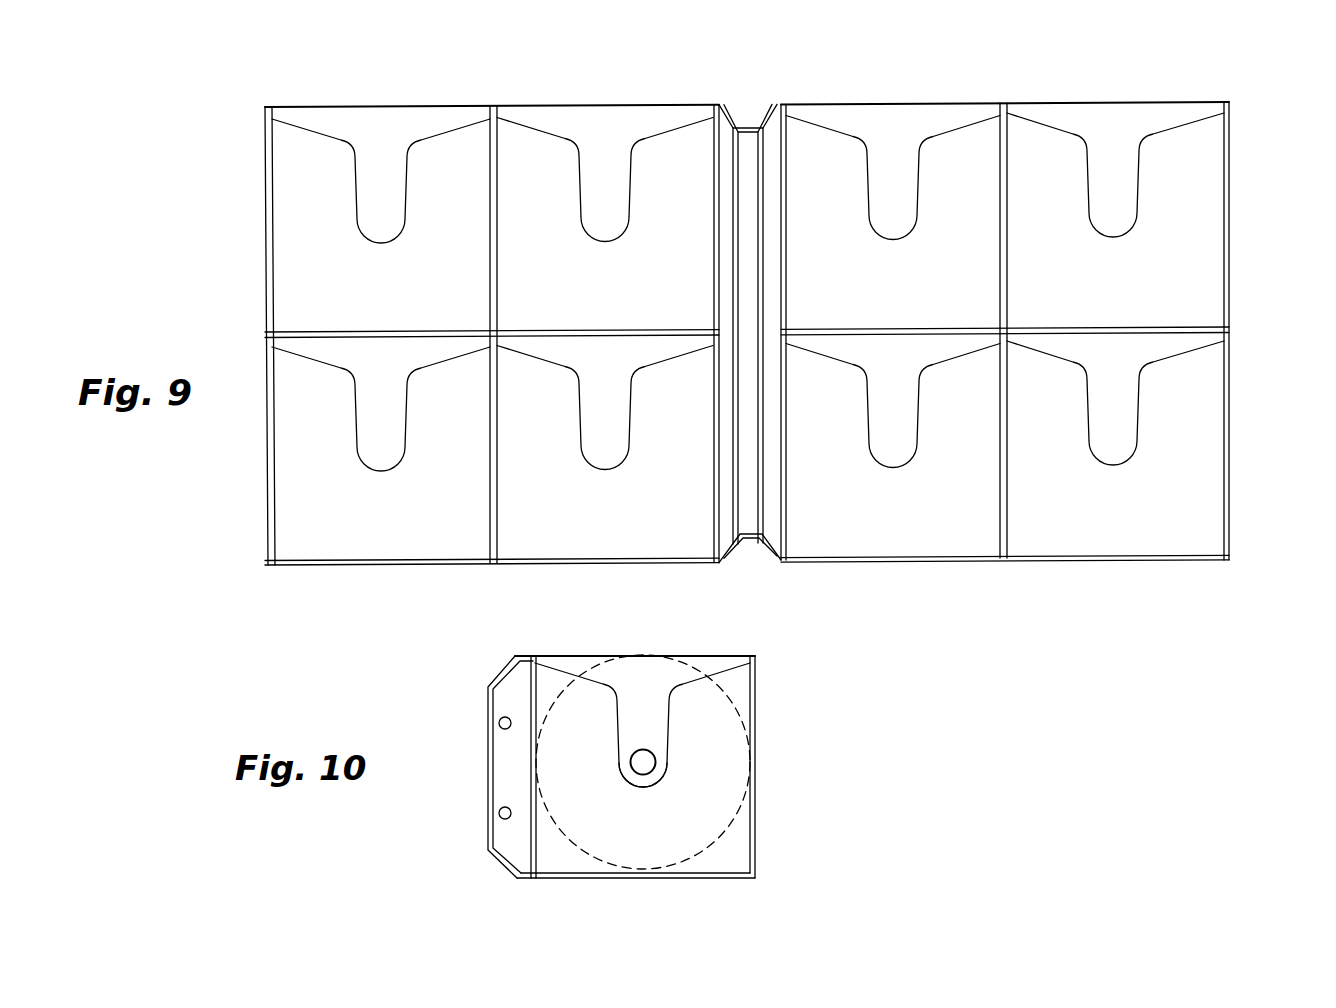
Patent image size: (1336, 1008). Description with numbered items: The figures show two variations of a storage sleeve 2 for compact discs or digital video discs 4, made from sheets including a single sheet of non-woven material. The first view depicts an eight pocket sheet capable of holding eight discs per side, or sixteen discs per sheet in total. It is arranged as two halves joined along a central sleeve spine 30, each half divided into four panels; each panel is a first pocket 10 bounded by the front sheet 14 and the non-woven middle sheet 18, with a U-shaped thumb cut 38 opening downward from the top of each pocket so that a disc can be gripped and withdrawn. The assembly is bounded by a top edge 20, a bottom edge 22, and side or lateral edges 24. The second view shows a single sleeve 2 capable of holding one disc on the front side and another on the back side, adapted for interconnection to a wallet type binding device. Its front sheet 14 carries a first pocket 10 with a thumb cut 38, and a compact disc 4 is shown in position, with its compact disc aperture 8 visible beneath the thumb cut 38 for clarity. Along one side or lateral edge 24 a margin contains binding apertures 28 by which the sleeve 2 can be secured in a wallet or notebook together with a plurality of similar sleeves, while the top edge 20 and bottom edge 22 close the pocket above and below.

In FIG. 9, the storage sleeve 2 is at (1066, 597).
In FIG. 10, the storage sleeve 2 is at (795, 741).
In FIG. 10, the compact disc 4 is at (687, 655).
In FIG. 10, the compact disc aperture 8 is at (655, 760).
In FIG. 10, the first pocket 10 is at (573, 663).
In FIG. 9, the front sheet 14 is at (297, 197).
In FIG. 10, the front sheet 14 is at (543, 677).
In FIG. 9, the non-woven middle sheet 18 is at (375, 127).
In FIG. 10, the non-woven middle sheet 18 is at (585, 660).
In FIG. 9, the top edge 20 is at (288, 107).
In FIG. 9, the bottom edge 22 is at (402, 565).
In FIG. 10, the bottom edge 22 is at (733, 880).
In FIG. 9, the side or lateral edge 24 is at (270, 452).
In FIG. 10, the side or lateral edge 24 is at (490, 767).
In FIG. 10, the binding aperture 28 is at (498, 720).
In FIG. 9, the sleeve spine 30 is at (770, 553).
In FIG. 10, the thumb cut 38 is at (622, 757).